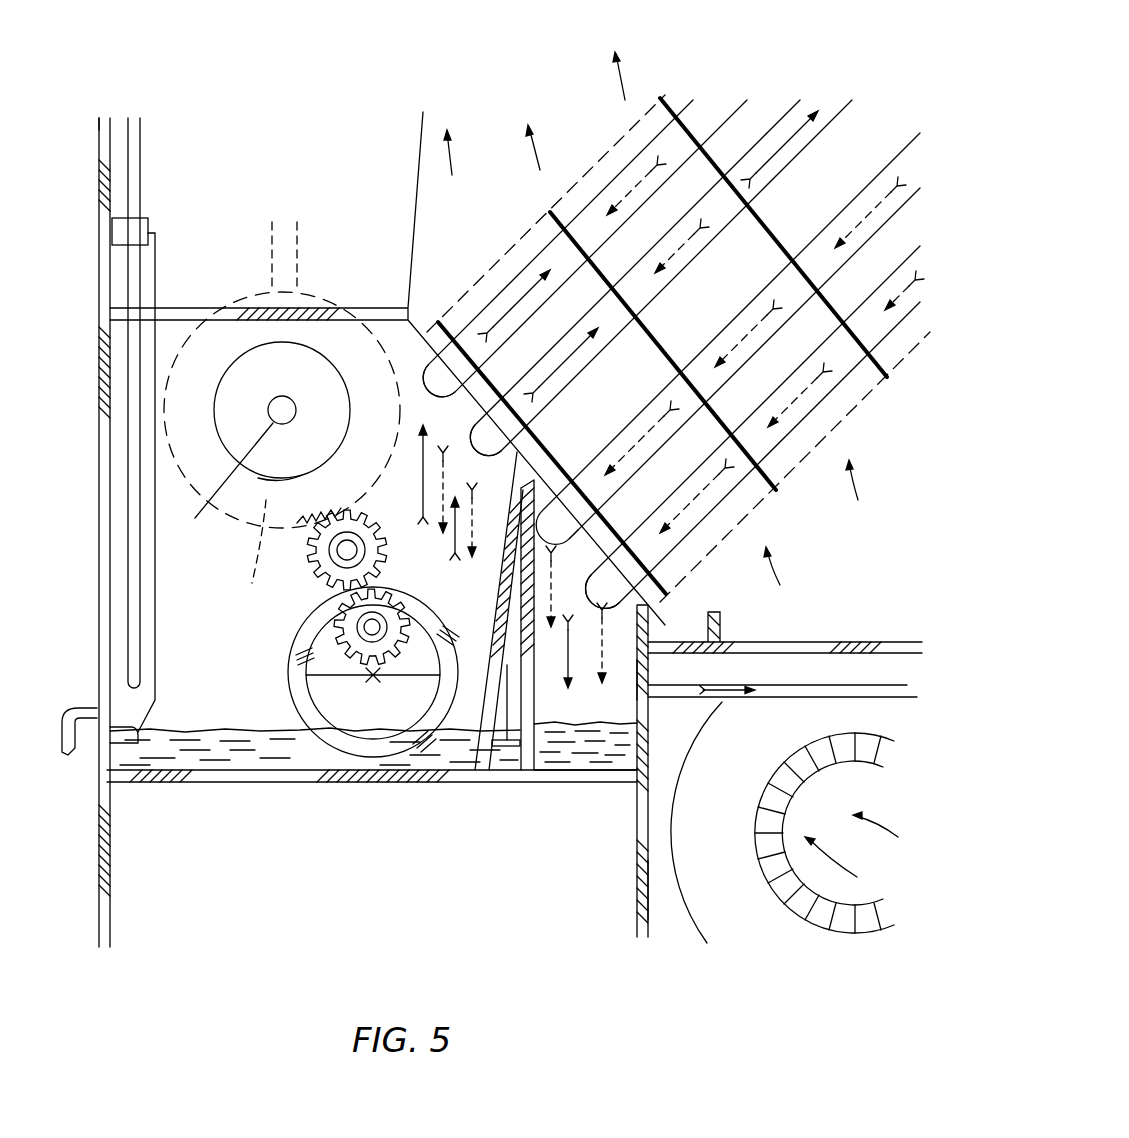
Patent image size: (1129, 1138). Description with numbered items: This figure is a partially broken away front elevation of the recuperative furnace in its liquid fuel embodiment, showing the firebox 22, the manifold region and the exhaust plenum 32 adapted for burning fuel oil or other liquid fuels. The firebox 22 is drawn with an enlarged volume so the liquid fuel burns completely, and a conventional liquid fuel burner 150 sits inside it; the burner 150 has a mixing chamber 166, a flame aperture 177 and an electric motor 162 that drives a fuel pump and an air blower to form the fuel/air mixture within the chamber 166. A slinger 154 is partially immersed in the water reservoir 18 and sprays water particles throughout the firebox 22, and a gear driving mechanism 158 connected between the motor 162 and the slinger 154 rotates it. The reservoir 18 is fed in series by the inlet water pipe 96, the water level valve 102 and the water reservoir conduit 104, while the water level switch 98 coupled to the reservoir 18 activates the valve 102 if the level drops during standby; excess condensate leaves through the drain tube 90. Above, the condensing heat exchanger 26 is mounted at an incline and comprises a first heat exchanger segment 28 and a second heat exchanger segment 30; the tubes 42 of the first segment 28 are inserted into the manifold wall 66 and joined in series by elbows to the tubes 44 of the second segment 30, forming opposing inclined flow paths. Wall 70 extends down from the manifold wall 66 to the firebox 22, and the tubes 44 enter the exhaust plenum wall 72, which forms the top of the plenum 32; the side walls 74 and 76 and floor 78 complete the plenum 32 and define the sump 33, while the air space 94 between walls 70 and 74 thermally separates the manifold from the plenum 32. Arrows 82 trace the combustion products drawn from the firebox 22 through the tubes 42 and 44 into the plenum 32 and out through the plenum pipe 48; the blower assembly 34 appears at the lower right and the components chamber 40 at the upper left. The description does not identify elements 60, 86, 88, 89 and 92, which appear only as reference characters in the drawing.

The components chamber 40 is at (218, 118).
The inlet water pipe 96 is at (143, 157).
The water level valve 102 is at (148, 219).
The water reservoir conduit 104 is at (128, 547).
The drive shaft 60 is at (300, 231).
The liquid fuel burner 150 is at (170, 452).
The flame aperture 177 is at (226, 484).
The mixing chamber 166 is at (258, 480).
The electric motor 162 is at (253, 551).
The gear driving mechanism 158 is at (318, 578).
The slinger 154 is at (291, 680).
The firebox 22 is at (180, 617).
The water reservoir 18 is at (245, 752).
The water level switch 98 is at (124, 738).
The drain tube 90 is at (73, 707).
The plenum pipe 48 is at (828, 688).
The manifold wall 70 is at (498, 588).
The plenum side wall 74 is at (533, 677).
The rod 92 is at (507, 665).
The air space 94 is at (508, 752).
The sump 33 is at (568, 748).
The floor 78 is at (623, 767).
The exhaust plenum 32 is at (590, 700).
The plenum side wall 76 is at (637, 675).
The partition wall 88 is at (656, 887).
The blower assembly 34 is at (703, 915).
The fan 86 is at (897, 832).
The second heat exchanger segment 30 is at (713, 556).
The first heat exchanger segment 28 is at (485, 275).
The arrows 82 is at (524, 293).
The manifold wall 66 is at (470, 402).
The first segment tubes 42 is at (471, 443).
The second segment tubes 44 is at (596, 590).
The exhaust plenum wall 72 is at (597, 540).
The flow passage 89 is at (636, 175).
The condensing heat exchanger 26 is at (817, 543).